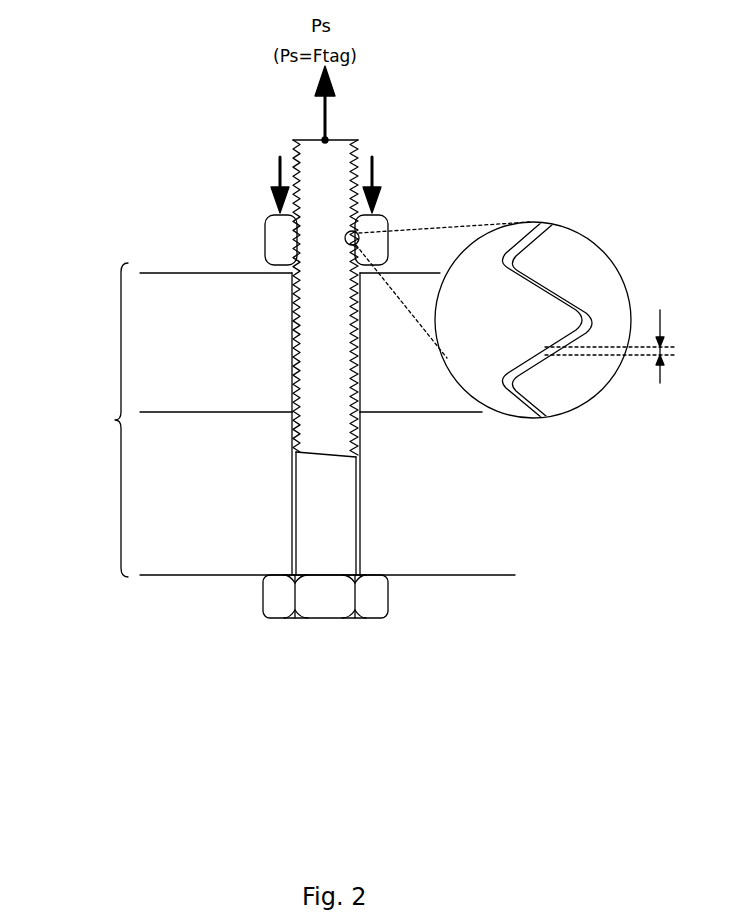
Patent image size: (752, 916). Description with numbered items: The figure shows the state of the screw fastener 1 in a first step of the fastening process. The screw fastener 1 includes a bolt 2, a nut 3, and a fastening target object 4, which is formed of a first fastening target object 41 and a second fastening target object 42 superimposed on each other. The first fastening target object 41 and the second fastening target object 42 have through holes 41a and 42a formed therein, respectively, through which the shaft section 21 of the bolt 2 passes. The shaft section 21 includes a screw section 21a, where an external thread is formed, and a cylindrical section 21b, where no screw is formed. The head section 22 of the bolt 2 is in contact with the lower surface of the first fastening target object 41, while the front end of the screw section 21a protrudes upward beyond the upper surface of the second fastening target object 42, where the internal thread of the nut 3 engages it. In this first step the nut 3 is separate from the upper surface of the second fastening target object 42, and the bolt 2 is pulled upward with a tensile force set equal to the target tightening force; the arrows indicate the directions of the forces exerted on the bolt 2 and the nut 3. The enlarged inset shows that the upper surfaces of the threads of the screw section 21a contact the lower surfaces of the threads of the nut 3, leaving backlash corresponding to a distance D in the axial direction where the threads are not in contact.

The screw fastener 1 is at (140, 177).
The bolt 2 is at (379, 426).
The nut 3 is at (264, 258).
The fastening target object 4 is at (110, 420).
The shaft section 21 is at (379, 357).
The screw section 21a is at (313, 427).
The cylindrical section 21b is at (308, 494).
The head section 22 is at (280, 602).
The first fastening target object 41 is at (452, 545).
The through hole 41a is at (362, 497).
The second fastening target object 42 is at (150, 297).
The through hole 42a is at (292, 367).
The distance D is at (613, 346).